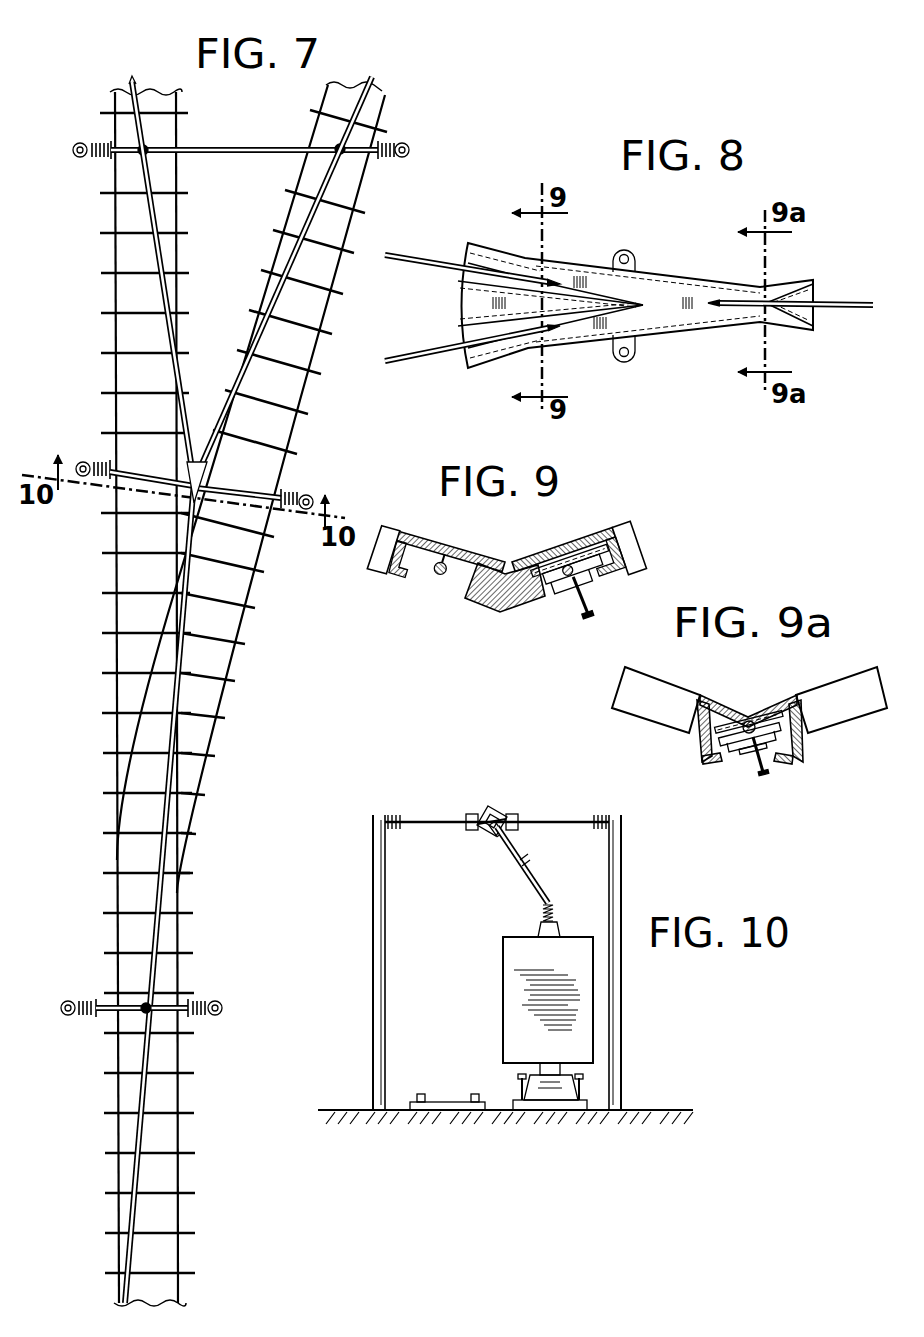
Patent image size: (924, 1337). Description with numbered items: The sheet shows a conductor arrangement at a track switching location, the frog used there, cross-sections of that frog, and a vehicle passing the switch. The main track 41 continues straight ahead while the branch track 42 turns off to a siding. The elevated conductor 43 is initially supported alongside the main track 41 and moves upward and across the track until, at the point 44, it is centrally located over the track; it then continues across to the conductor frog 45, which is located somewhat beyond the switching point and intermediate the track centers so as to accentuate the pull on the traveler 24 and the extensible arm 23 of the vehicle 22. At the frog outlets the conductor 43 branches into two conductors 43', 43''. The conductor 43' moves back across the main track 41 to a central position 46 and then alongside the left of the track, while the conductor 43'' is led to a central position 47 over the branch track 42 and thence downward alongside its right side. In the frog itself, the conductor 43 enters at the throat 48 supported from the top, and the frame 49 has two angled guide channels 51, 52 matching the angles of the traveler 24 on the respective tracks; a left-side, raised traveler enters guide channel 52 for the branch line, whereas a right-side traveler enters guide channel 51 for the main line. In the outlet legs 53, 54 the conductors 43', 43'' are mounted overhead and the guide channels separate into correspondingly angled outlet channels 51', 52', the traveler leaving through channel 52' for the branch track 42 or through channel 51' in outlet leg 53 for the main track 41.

In FIG. 10, the electrically-powered vehicle 22 is at (516, 1000).
In FIG. 9A, the extensible arm 23 is at (758, 766).
In FIG. 10, the extensible arm 23 is at (526, 866).
In FIG. 9A, the traveler 24 is at (743, 754).
In FIG. 10, the traveler 24 is at (493, 834).
In FIG. 7, the main track 41 is at (116, 619).
In FIG. 10, the main track 41 is at (438, 1102).
In FIG. 7, the branch track 42 is at (300, 406).
In FIG. 10, the branch track 42 is at (553, 1110).
In FIG. 7, the elevated conductor 43 is at (128, 892).
In FIG. 8, the elevated conductor 43 is at (790, 282).
In FIG. 9A, the elevated conductor 43 is at (770, 697).
In FIG. 7, the branch conductor 43' is at (177, 279).
In FIG. 8, the branch conductor 43' is at (472, 253).
In FIG. 9, the branch conductor 43' is at (420, 583).
In FIG. 7, the branch conductor 43'' is at (283, 279).
In FIG. 8, the branch conductor 43'' is at (464, 340).
In FIG. 9, the branch conductor 43'' is at (559, 597).
In FIG. 7, the central support point 44 is at (144, 1016).
In FIG. 7, the conductor frog 45 is at (197, 456).
In FIG. 8, the conductor frog 45 is at (670, 268).
In FIG. 10, the conductor frog 45 is at (495, 811).
In FIG. 7, the central position 46 is at (147, 148).
In FIG. 7, the central position 47 is at (338, 147).
In FIG. 8, the entering leg or throat 48 is at (773, 324).
In FIG. 8, the frame 49 is at (696, 280).
In FIG. 9, the frame 49 is at (512, 567).
In FIG. 9A, the frame 49 is at (739, 700).
In FIG. 9A, the angled guide channel 51 is at (749, 717).
In FIG. 9, the outlet channel 51' is at (414, 582).
In FIG. 9A, the angled guide channel 52 is at (714, 742).
In FIG. 9, the outlet channel 52' is at (585, 581).
In FIG. 8, the outlet leg 53 is at (484, 258).
In FIG. 9, the outlet leg 53 is at (467, 553).
In FIG. 8, the outlet leg 54 is at (478, 352).
In FIG. 9, the outlet leg 54 is at (574, 548).